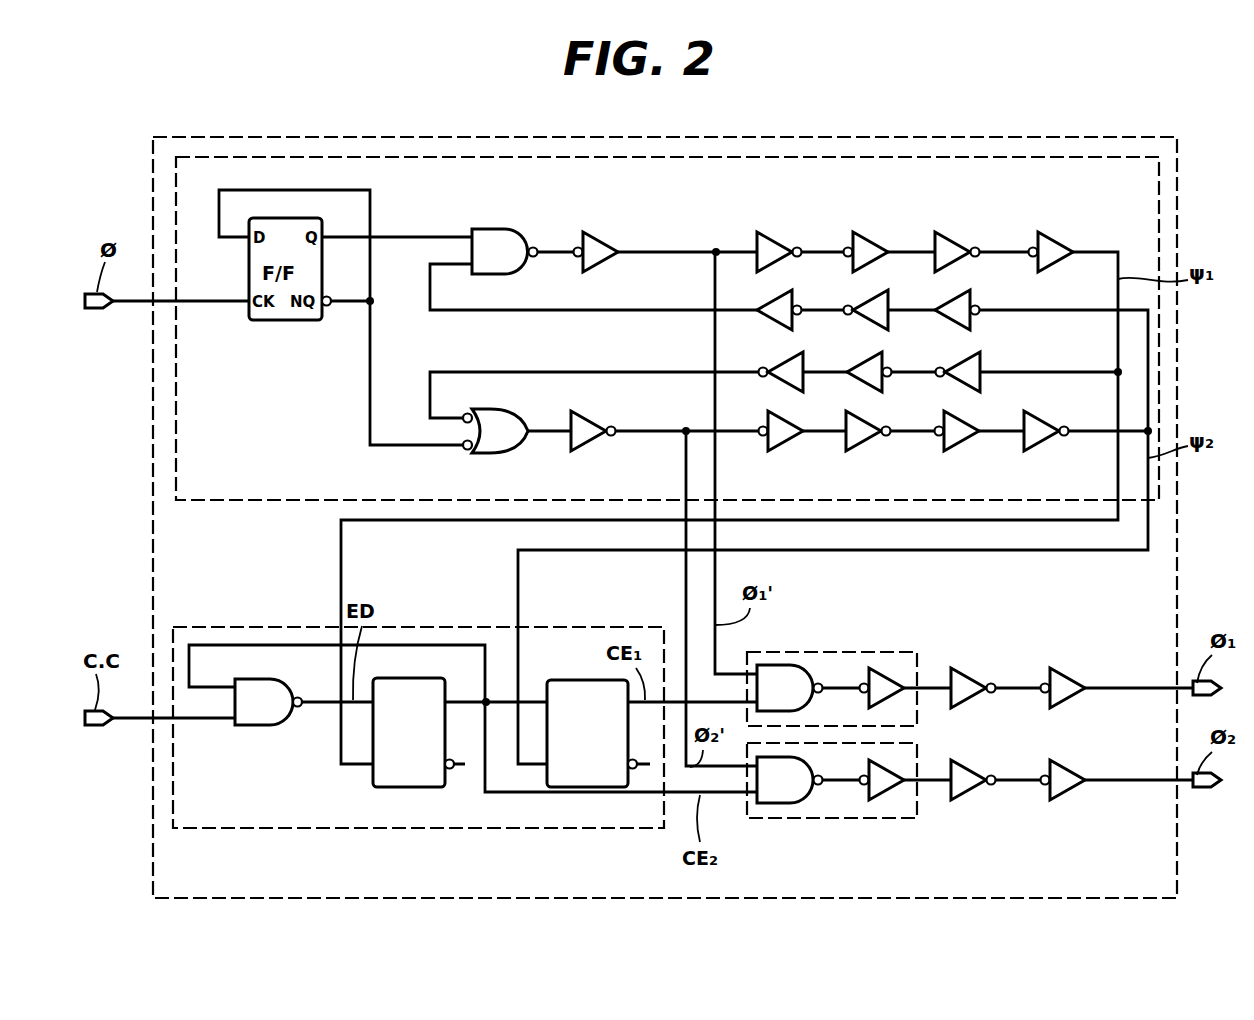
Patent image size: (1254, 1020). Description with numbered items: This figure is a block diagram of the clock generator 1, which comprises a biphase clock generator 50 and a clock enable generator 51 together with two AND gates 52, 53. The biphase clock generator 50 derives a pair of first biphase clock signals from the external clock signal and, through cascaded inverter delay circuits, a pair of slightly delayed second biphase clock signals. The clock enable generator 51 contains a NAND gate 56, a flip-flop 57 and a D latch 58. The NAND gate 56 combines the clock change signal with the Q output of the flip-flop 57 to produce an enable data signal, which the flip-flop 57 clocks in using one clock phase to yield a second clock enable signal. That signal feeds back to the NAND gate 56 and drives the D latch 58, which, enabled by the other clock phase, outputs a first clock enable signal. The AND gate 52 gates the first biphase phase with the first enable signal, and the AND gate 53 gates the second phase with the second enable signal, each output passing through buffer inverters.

The clock generator 1 is at (1104, 137).
The biphase clock generator 50 is at (493, 157).
The clock enable generator 51 is at (243, 828).
The AND gate 52 is at (833, 652).
The AND gate 53 is at (838, 818).
The NAND gate 56 is at (268, 726).
The flip-flop 57 is at (430, 788).
The D latch 58 is at (598, 788).